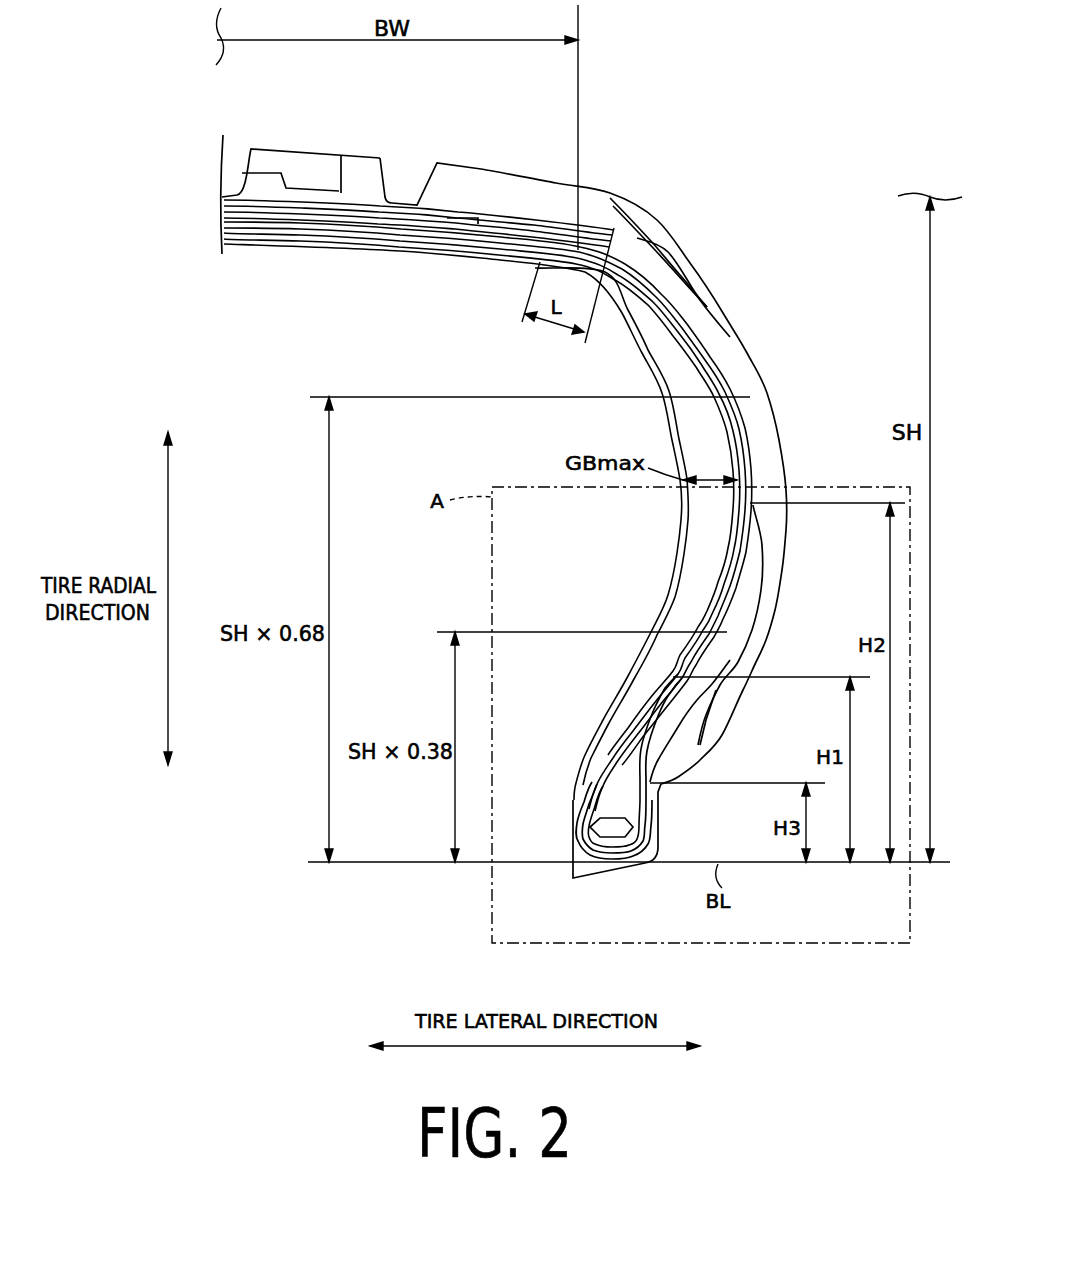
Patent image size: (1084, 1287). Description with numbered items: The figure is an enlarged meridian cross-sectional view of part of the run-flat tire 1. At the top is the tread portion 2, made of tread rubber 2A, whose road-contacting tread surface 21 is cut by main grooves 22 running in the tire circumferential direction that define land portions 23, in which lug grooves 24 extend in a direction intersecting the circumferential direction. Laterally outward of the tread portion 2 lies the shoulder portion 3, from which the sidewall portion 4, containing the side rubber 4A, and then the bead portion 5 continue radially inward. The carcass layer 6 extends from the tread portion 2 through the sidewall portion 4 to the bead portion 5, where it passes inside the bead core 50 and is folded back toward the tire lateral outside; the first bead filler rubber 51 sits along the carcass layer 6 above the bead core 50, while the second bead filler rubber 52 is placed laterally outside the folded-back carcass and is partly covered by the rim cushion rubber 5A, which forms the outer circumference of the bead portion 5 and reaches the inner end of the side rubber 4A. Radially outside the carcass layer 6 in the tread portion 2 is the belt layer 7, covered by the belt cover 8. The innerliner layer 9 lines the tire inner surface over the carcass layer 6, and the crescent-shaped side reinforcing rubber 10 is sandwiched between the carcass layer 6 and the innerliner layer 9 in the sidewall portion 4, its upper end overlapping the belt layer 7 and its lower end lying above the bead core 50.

The run-flat tire 1 is at (700, 107).
The tread portion 2 is at (307, 137).
The tread rubber 2A is at (447, 215).
The tread surface 21 is at (268, 147).
The main groove 22 is at (388, 165).
The land portion 23 is at (363, 152).
The lug groove 24 is at (338, 185).
The shoulder portion 3 is at (657, 197).
The sidewall portion 4 is at (786, 625).
The side rubber 4A is at (772, 570).
The bead portion 5 is at (570, 880).
The rim cushion rubber 5A is at (657, 815).
The bead core 50 is at (600, 827).
The first bead filler rubber 51 is at (613, 805).
The second bead filler rubber 52 is at (693, 688).
The carcass layer 6 is at (697, 363).
The belt layer 7 is at (363, 232).
The belt cover 8 is at (547, 222).
The innerliner layer 9 is at (640, 362).
The side reinforcing rubber 10 is at (685, 553).